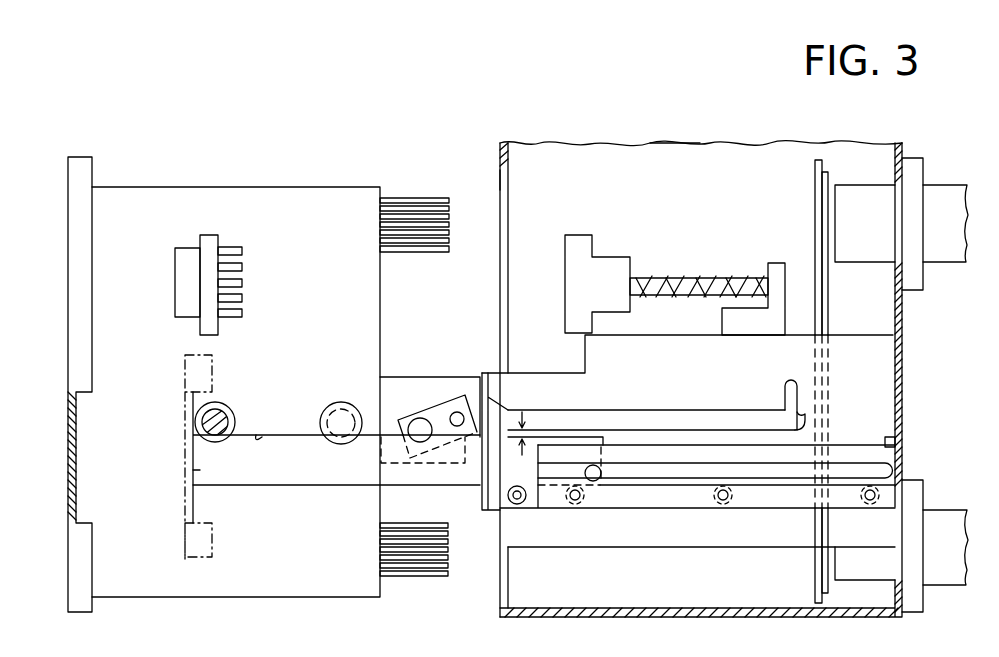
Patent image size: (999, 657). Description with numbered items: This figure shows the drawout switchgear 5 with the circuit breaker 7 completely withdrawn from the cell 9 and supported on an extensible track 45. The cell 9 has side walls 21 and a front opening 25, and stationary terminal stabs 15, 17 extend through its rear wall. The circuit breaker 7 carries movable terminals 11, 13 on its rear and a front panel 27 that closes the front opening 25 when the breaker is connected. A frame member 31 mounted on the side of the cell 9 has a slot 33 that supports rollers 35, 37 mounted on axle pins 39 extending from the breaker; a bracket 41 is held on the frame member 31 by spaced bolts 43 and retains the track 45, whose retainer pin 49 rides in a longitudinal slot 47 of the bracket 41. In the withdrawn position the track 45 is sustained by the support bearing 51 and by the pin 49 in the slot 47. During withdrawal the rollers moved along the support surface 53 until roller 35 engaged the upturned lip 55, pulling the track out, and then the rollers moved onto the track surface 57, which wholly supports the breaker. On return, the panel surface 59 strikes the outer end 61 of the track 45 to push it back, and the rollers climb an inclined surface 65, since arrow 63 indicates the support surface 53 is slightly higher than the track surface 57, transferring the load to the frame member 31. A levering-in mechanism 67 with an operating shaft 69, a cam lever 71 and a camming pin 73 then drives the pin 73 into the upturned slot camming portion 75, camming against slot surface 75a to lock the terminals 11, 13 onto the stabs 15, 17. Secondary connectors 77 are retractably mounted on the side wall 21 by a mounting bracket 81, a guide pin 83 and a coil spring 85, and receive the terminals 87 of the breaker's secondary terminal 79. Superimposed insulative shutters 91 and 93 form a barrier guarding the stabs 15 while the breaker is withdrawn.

The drawout switchgear 5 is at (446, 108).
The circuit breaker 7 is at (145, 200).
The cell 9 is at (540, 158).
The movable terminal 11 is at (420, 200).
The movable terminal 13 is at (400, 528).
The stationary terminal stab 15 is at (862, 197).
The stationary terminal stab 17 is at (880, 571).
The side wall 21 is at (675, 155).
The front opening 25 is at (500, 178).
The front panel 27 is at (78, 242).
The frame member 31 is at (580, 382).
The slot 33 is at (606, 412).
The roller 35 is at (234, 413).
The roller 37 is at (346, 403).
The axle pin 39 is at (217, 413).
The bracket 41 is at (780, 499).
The bolt 43 is at (752, 490).
The extensible track 45 is at (321, 472).
The longitudinal slot 47 is at (691, 478).
The retainer pin 49 is at (595, 483).
The support bearing 51 is at (516, 505).
The support surface 53 is at (661, 434).
The upturned lip 55 is at (193, 436).
The track surface 57 is at (260, 437).
The panel surface 59 is at (70, 421).
The outer end 61 is at (193, 471).
The arrow 63 is at (527, 420).
The inclined surface 65 is at (512, 409).
The levering-in mechanism 67 is at (456, 394).
The operating shaft 69 is at (415, 424).
The cam lever 71 is at (438, 408).
The camming pin 73 is at (457, 427).
The slot camming portion 75 is at (803, 401).
The slot surface 75a is at (786, 390).
The secondary connector 77 is at (578, 243).
The secondary terminal 79 is at (208, 240).
The mounting bracket 81 is at (736, 329).
The guide pin 83 is at (700, 284).
The coil spring 85 is at (656, 282).
The terminal 87 is at (238, 251).
The shutter 91 is at (829, 288).
The shutter 93 is at (817, 257).